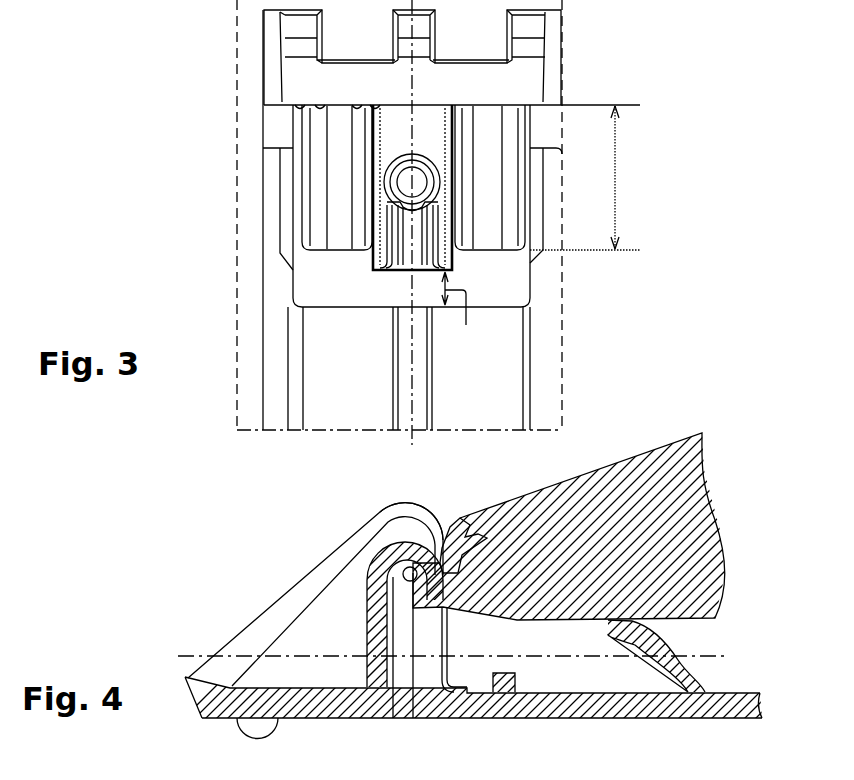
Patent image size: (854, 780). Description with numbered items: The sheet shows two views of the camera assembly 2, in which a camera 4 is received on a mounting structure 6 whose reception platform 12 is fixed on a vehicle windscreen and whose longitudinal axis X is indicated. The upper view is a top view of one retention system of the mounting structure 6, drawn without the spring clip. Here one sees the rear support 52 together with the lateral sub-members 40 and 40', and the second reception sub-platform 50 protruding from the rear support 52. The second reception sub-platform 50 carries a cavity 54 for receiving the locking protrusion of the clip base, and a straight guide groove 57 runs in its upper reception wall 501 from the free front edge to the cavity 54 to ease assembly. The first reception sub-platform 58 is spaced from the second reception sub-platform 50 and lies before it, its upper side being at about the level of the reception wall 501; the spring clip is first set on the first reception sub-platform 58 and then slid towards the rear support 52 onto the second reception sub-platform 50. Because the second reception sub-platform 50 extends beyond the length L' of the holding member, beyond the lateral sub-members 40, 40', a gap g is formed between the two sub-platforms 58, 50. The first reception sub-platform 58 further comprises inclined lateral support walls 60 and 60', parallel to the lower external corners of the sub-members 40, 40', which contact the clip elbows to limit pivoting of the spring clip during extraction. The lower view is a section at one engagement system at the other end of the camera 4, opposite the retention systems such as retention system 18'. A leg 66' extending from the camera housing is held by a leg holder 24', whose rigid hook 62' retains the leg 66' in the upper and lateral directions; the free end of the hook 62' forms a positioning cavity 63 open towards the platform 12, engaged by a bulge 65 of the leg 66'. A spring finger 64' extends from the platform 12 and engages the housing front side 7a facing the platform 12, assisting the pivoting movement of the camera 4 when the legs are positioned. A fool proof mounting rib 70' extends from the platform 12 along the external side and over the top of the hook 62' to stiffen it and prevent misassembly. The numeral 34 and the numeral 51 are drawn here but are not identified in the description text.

In FIG. 4, the camera assembly 2 is at (710, 447).
In FIG. 4, the camera 4 is at (567, 480).
In FIG. 4, the mounting structure 6 is at (540, 720).
In FIG. 4, the housing front side 7a is at (677, 623).
In FIG. 4, the reception platform 12 is at (332, 698).
In FIG. 4, the retention system 18' is at (299, 771).
In FIG. 4, the leg holder 24' is at (358, 630).
In FIG. 3, the housing 34 is at (483, 283).
In FIG. 3, the lateral sub-member 40 is at (284, 177).
In FIG. 3, the lateral sub-member 40' is at (530, 177).
In FIG. 3, the second reception sub-platform 50 is at (373, 255).
In FIG. 3, the reception wall 501 is at (443, 262).
In FIG. 3, the slot 51 is at (422, 375).
In FIG. 3, the rear support 52 is at (550, 55).
In FIG. 3, the cavity 54 is at (405, 180).
In FIG. 3, the guide groove 57 is at (410, 258).
In FIG. 3, the first reception sub-platform 58 is at (332, 388).
In FIG. 3, the inclined lateral support wall 60 is at (239, 209).
In FIG. 3, the inclined lateral support wall 60' is at (586, 216).
In FIG. 4, the rigid hook 62' is at (290, 599).
In FIG. 4, the positioning cavity 63 is at (400, 588).
In FIG. 4, the spring finger 64' is at (654, 690).
In FIG. 4, the bulge 65 is at (455, 523).
In FIG. 4, the leg 66' is at (412, 667).
In FIG. 4, the fool proof mounting rib 70' is at (363, 518).
In FIG. 3, the gap g is at (454, 310).
In FIG. 3, the length L' is at (585, 178).
In FIG. 4, the longitudinal axis X is at (442, 656).